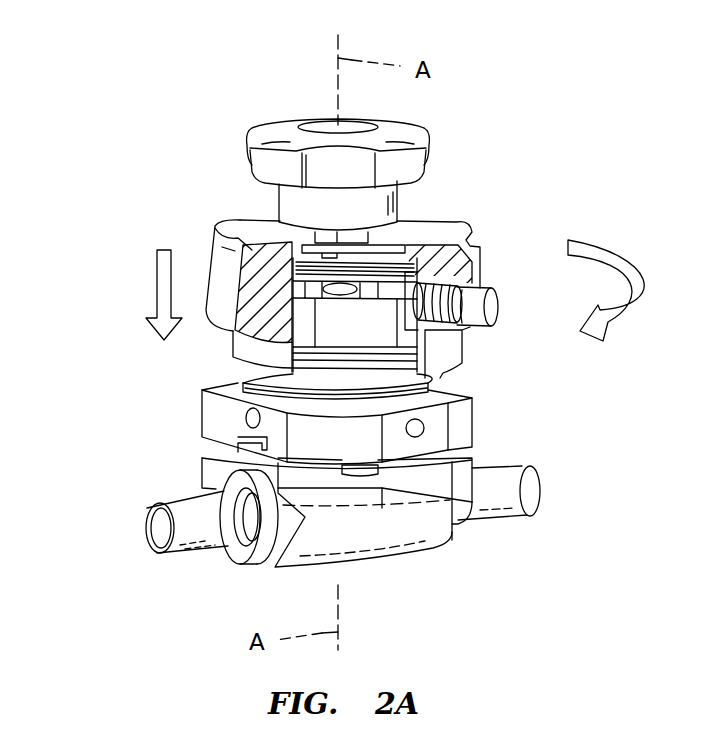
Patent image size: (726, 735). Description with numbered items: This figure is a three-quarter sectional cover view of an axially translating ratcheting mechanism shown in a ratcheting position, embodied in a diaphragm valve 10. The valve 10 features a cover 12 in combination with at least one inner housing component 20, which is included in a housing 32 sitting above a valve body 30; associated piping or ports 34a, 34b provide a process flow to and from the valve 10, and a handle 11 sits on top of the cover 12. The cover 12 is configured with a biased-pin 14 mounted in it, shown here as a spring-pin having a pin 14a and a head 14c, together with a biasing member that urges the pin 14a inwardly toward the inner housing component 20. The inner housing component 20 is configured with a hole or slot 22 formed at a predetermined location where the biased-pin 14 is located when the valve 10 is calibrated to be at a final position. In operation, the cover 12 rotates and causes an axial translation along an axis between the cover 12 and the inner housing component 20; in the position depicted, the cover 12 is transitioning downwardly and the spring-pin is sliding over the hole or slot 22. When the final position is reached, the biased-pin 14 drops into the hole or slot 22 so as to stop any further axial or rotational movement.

The valve 10 is at (135, 115).
The handle 11 is at (265, 127).
The cover 12 is at (242, 223).
The biased-pin 14 is at (423, 284).
The pin 14a is at (490, 306).
The head 14c is at (465, 282).
The inner housing component 20 is at (332, 323).
The hole or slot 22 is at (432, 335).
The valve body 30 is at (398, 552).
The housing 32 is at (203, 410).
The port 34a is at (168, 502).
The port 34b is at (505, 515).